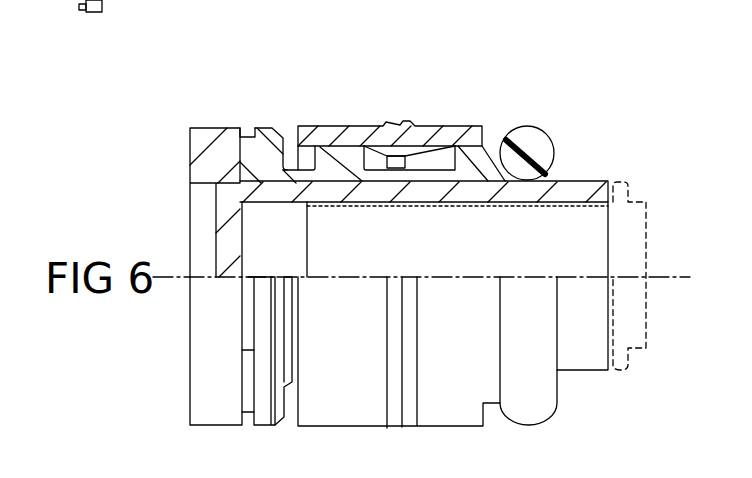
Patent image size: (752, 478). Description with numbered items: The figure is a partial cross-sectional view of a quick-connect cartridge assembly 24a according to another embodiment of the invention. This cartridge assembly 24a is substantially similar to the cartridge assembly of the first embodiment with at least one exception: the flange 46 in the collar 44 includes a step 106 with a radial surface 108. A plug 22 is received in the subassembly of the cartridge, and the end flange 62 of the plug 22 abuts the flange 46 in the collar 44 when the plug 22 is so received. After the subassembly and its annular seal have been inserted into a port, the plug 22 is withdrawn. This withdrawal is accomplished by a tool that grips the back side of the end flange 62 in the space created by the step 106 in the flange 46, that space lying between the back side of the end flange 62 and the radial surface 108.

The cartridge assembly 24a is at (653, 40).
The plug 22 is at (208, 128).
The collar 44 is at (262, 128).
The flange 46 is at (263, 155).
The step 106 is at (247, 128).
The radial surface 108 is at (253, 350).
The end flange 62 is at (213, 375).